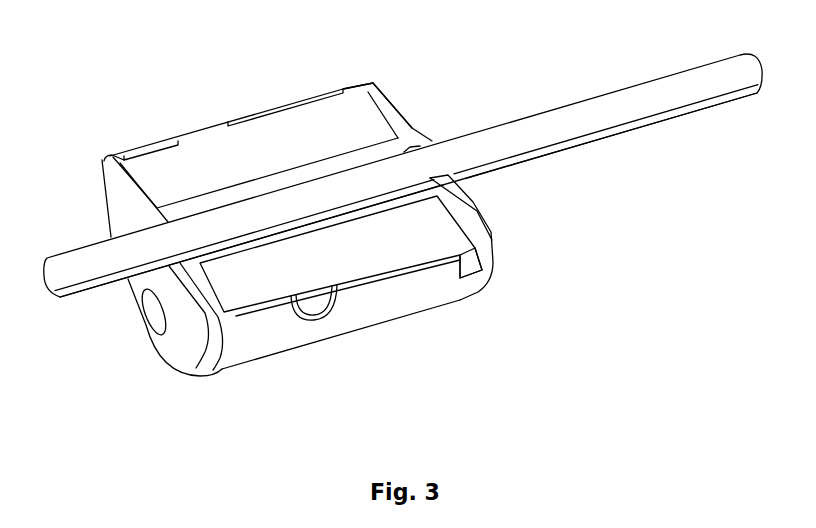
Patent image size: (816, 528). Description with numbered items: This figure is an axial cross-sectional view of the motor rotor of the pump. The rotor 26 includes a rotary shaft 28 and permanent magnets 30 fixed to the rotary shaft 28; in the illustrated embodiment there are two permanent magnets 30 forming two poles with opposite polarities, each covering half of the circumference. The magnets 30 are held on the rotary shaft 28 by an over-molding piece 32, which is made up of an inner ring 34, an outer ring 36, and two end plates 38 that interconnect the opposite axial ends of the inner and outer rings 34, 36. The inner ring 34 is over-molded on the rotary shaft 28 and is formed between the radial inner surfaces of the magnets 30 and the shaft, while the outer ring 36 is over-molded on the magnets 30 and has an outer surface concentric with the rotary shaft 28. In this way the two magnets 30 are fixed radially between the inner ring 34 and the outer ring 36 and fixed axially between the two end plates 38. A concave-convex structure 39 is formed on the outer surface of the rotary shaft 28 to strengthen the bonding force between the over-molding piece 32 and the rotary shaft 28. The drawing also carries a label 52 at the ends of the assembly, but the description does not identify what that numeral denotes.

The rotor 26 is at (396, 205).
The rotary shaft 28 is at (577, 128).
The magnets 30 is at (275, 140).
The over-molding piece 32 is at (113, 163).
The inner ring 34 is at (348, 160).
The outer ring 36 is at (395, 300).
The end plates 38 is at (186, 331).
The concave-convex structure 39 is at (462, 196).
The tab 52 is at (373, 82).